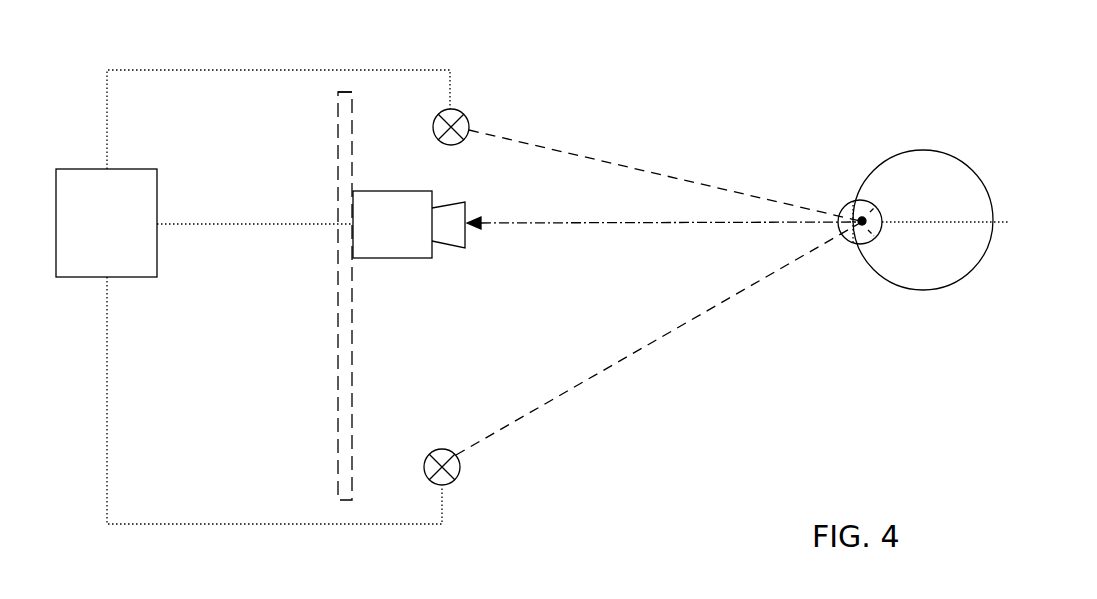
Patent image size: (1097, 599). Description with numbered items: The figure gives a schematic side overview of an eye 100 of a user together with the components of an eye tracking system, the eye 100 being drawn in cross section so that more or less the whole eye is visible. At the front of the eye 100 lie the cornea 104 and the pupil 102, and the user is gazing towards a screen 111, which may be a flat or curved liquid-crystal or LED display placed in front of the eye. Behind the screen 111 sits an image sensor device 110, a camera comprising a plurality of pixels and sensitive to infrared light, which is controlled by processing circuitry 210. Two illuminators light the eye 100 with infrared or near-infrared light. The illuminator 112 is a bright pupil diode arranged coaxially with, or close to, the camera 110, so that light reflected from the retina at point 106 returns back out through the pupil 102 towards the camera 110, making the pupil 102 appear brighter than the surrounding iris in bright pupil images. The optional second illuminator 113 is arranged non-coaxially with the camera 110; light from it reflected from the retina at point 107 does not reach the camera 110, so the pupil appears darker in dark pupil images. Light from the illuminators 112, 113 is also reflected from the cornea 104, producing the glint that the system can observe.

The eye 100 is at (907, 115).
The pupil 102 is at (857, 244).
The cornea 104 is at (878, 243).
The reflection 106 is at (887, 221).
The reflection 107 is at (890, 202).
The image sensor device 110 is at (394, 191).
The screen 111 is at (345, 92).
The illuminator 112 is at (462, 113).
The second illuminator 113 is at (455, 482).
The processing circuitry 210 is at (106, 223).